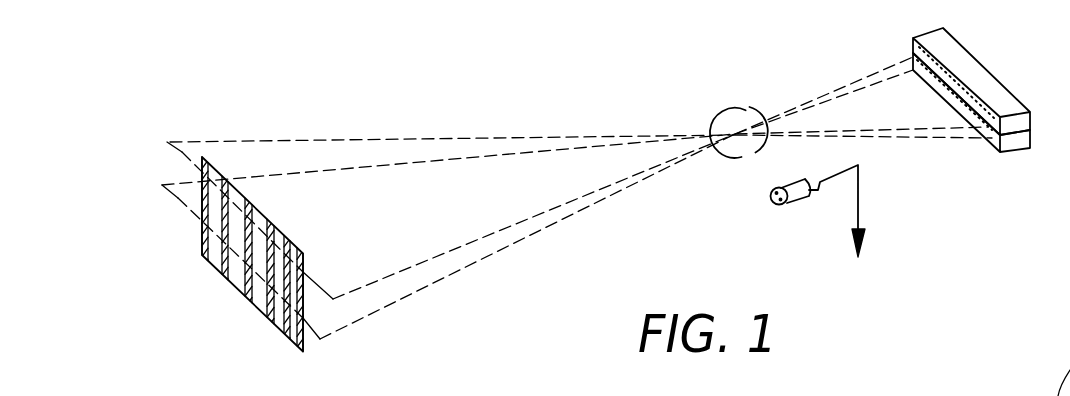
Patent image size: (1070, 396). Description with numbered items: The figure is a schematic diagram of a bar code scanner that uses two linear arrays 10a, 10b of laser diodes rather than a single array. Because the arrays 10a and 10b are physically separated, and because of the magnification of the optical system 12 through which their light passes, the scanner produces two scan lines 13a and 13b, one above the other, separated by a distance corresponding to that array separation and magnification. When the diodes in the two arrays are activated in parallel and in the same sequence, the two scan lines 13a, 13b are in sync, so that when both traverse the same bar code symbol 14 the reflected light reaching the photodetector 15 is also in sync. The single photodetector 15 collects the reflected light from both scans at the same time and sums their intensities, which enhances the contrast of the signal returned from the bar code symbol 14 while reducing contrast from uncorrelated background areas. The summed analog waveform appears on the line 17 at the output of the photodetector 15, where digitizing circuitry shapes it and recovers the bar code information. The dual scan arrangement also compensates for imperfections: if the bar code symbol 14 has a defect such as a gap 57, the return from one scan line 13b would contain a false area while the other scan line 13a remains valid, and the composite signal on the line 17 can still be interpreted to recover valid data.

The first linear array 10a is at (953, 53).
The second linear array 10b is at (1013, 143).
The optical system 12 is at (748, 107).
The first scan line 13a is at (182, 207).
The second scan line 13b is at (178, 150).
The bar code symbol 14 is at (240, 287).
The photodetector 15 is at (800, 187).
The output line 17 is at (860, 200).
The gap 57 is at (1036, 395).